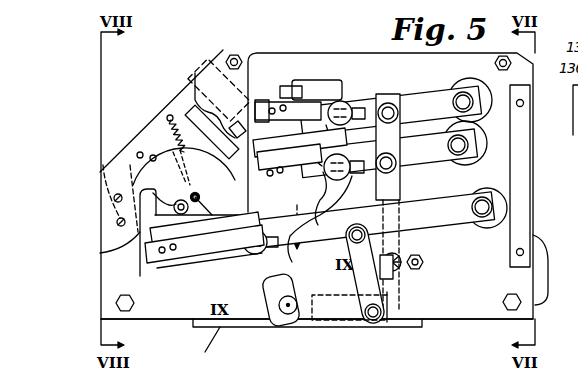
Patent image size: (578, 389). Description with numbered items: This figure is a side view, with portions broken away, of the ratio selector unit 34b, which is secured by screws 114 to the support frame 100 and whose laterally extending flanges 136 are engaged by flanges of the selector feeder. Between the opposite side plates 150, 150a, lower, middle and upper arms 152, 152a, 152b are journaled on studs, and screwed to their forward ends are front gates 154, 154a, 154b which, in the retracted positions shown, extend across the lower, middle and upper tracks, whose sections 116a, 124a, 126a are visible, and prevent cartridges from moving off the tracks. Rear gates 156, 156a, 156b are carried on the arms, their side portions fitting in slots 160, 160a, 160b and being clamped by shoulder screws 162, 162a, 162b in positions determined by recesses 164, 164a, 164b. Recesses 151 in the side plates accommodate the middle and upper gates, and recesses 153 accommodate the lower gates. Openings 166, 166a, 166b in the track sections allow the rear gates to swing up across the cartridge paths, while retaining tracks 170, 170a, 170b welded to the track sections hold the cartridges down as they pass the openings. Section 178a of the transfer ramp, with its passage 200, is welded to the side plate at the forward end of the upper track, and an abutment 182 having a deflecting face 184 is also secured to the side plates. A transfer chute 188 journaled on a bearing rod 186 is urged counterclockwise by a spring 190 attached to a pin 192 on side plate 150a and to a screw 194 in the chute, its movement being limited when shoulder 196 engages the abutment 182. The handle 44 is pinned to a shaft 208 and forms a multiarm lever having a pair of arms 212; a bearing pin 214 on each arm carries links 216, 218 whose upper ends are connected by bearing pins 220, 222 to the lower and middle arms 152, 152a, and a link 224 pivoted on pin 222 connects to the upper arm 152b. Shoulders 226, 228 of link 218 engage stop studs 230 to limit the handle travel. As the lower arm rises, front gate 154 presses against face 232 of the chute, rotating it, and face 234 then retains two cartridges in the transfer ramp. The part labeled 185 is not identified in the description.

The ratio selector unit 34b is at (216, 330).
The handle 44 is at (258, 319).
The support frame 100 is at (422, 325).
The screws 114 is at (130, 310).
The lower track section 116a is at (292, 263).
The middle track section 124a is at (400, 138).
The upper track section 126a is at (342, 93).
The laterally extending flanges 136 is at (537, 195).
The side plate 150 is at (360, 53).
The side plate 150a is at (113, 163).
The recesses 151 is at (238, 55).
The lower arm 152 is at (465, 217).
The middle arm 152a is at (457, 160).
The upper arm 152b is at (447, 117).
The recesses 153 is at (140, 275).
The lower front gate 154 is at (150, 254).
The middle front gate 154a is at (262, 172).
The upper front gate 154b is at (270, 100).
The lower rear gate 156 is at (215, 254).
The middle rear gate 156a is at (340, 181).
The upper rear gate 156b is at (322, 77).
The slot 160 is at (198, 247).
The slot 160a is at (318, 208).
The slot 160b is at (323, 150).
The shoulder screw 162 is at (287, 278).
The shoulder screw 162a is at (384, 175).
The shoulder screw 162b is at (356, 115).
The recesses 164 is at (178, 252).
The recesses 164a is at (316, 166).
The recesses 164b is at (290, 93).
The opening 166 is at (291, 160).
The opening 166a is at (258, 150).
The opening 166b is at (307, 93).
The retaining track 170 is at (201, 208).
The retaining track 170a is at (241, 129).
The retaining track 170b is at (340, 79).
The transfer ramp section 178a is at (207, 109).
The abutment 182 is at (158, 155).
The deflecting face 184 is at (148, 229).
The cam disc 185 is at (184, 166).
The bearing rod 186 is at (170, 198).
The transfer chute 188 is at (162, 151).
The spring 190 is at (168, 145).
The pin 192 is at (182, 136).
The screw 194 is at (196, 192).
The shoulder 196 is at (157, 155).
The passage 200 is at (175, 104).
The shaft 208 is at (290, 326).
The arms 212 is at (341, 322).
The bearing pin 214 is at (376, 319).
The link 216 is at (390, 281).
The link 218 is at (399, 186).
The bearing pin 220 is at (372, 240).
The bearing pin 222 is at (404, 162).
The link 224 is at (400, 110).
The shoulder 226 is at (395, 276).
The shoulder 228 is at (398, 266).
The stop stud 230 is at (420, 257).
The face 232 is at (106, 246).
The face 234 is at (158, 153).